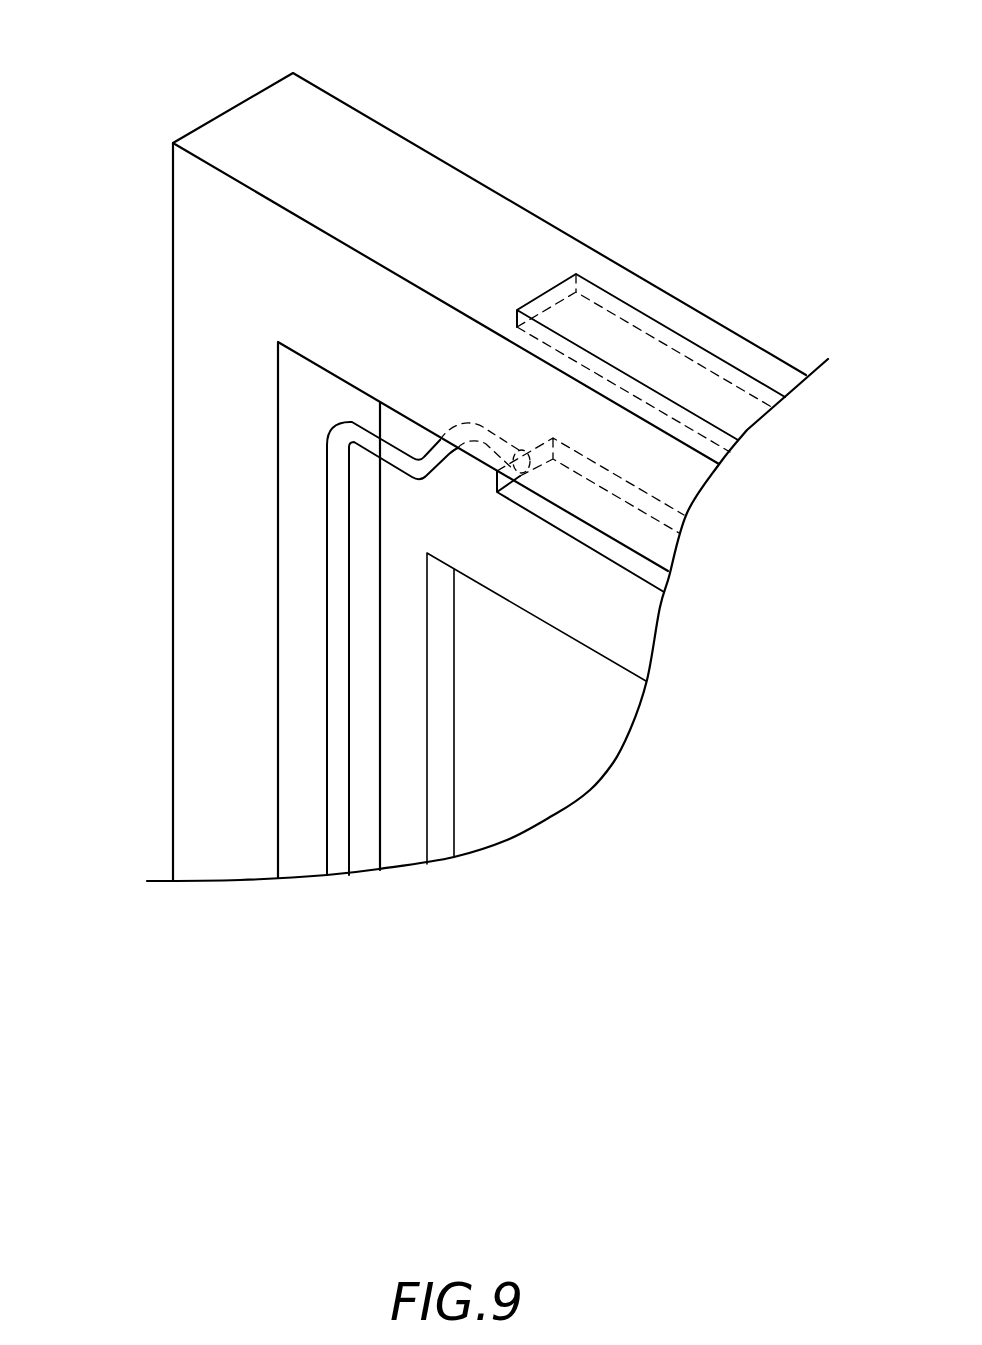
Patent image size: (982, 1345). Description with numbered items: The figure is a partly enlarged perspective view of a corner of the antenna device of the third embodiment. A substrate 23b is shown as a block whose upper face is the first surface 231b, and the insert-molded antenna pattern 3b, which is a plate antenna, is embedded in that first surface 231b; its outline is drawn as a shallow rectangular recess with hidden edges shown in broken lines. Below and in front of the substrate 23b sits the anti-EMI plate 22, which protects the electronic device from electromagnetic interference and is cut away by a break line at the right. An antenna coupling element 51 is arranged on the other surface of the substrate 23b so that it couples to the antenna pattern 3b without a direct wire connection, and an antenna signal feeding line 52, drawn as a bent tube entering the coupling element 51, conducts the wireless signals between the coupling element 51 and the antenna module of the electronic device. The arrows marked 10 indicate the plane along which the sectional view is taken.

The section line 10 is at (188, 100).
The anti-EMI plate 22 is at (603, 745).
The substrate 23b is at (178, 337).
The first surface 231b is at (370, 142).
The insert-molded antenna pattern 3b is at (627, 313).
The antenna coupling element 51 is at (655, 573).
The antenna signal feeding line 52 is at (327, 455).